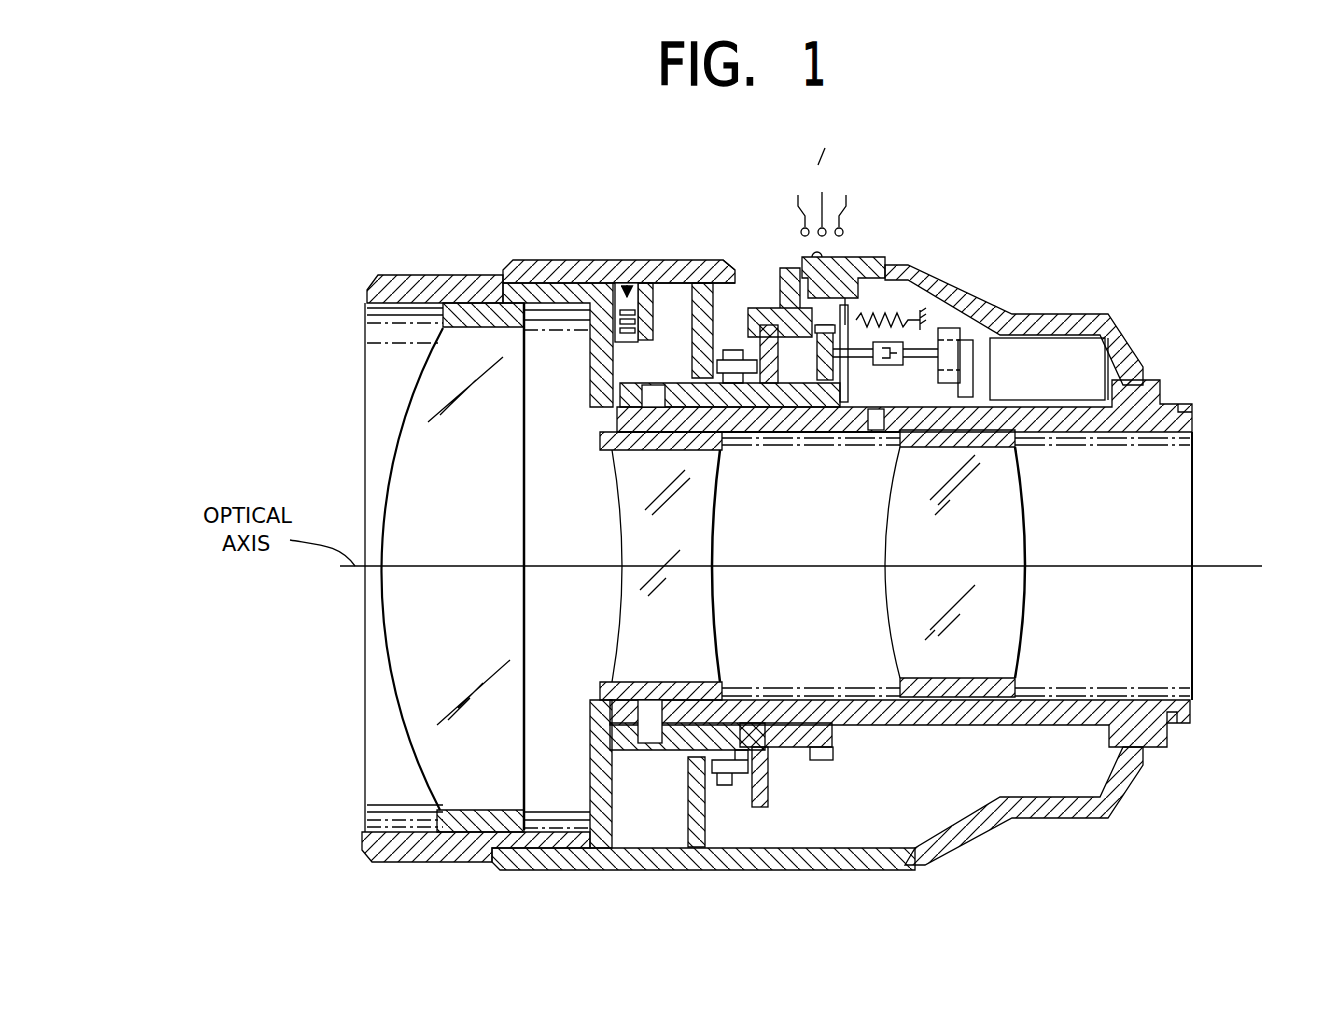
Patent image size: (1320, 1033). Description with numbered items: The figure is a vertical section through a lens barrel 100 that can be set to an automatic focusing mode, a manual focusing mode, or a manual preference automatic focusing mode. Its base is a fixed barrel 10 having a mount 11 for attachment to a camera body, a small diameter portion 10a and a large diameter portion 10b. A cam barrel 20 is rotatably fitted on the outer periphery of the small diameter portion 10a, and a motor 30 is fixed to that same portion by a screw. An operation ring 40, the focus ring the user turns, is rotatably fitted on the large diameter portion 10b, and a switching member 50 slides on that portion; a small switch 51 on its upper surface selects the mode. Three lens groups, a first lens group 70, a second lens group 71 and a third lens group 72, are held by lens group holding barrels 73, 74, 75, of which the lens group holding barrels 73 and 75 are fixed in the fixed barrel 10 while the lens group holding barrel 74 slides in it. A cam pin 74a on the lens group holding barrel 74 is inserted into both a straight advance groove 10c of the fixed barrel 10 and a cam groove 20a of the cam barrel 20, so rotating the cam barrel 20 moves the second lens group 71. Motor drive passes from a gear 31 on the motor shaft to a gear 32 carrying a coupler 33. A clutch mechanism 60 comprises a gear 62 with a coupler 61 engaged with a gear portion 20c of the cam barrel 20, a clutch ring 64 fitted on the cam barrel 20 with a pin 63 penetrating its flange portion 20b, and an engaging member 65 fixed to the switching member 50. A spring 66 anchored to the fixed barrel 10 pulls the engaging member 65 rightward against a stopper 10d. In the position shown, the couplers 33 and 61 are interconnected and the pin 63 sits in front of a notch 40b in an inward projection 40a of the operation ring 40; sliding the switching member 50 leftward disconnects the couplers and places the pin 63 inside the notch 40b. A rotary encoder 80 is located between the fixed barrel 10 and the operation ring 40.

The fixed barrel 10 is at (1137, 402).
The small diameter portion 10a is at (1080, 432).
The large diameter portion 10b is at (460, 292).
The straight advance groove 10c is at (776, 432).
The stopper 10d is at (878, 430).
The mount 11 is at (1195, 410).
The cam barrel 20 is at (668, 380).
The cam groove 20a is at (645, 340).
The flange portion 20b is at (706, 340).
The gear portion 20c is at (822, 410).
The motor 30 is at (1085, 360).
The gear 31 is at (963, 340).
The gear 32 is at (950, 327).
The coupler 33 is at (898, 367).
The operation ring 40 is at (560, 278).
The projection 40a is at (730, 270).
The notch 40b is at (686, 400).
The switching member 50 is at (872, 320).
The switch 51 is at (820, 264).
The clutch mechanism 60 is at (932, 330).
The coupler 61 is at (826, 358).
The gear 62 is at (842, 402).
The pin 63 is at (735, 395).
The clutch ring 64 is at (765, 325).
The engaging member 65 is at (778, 308).
The spring 66 is at (899, 298).
The first lens group 70 is at (412, 455).
The second lens group 71 is at (645, 612).
The third lens group 72 is at (1000, 608).
The lens group holding barrel 73 is at (443, 318).
The lens group holding barrel 74 is at (727, 690).
The cam pin 74a is at (618, 412).
The lens group holding barrel 75 is at (993, 684).
The contact brush 80 is at (625, 300).
The lens barrel 100 is at (1158, 312).